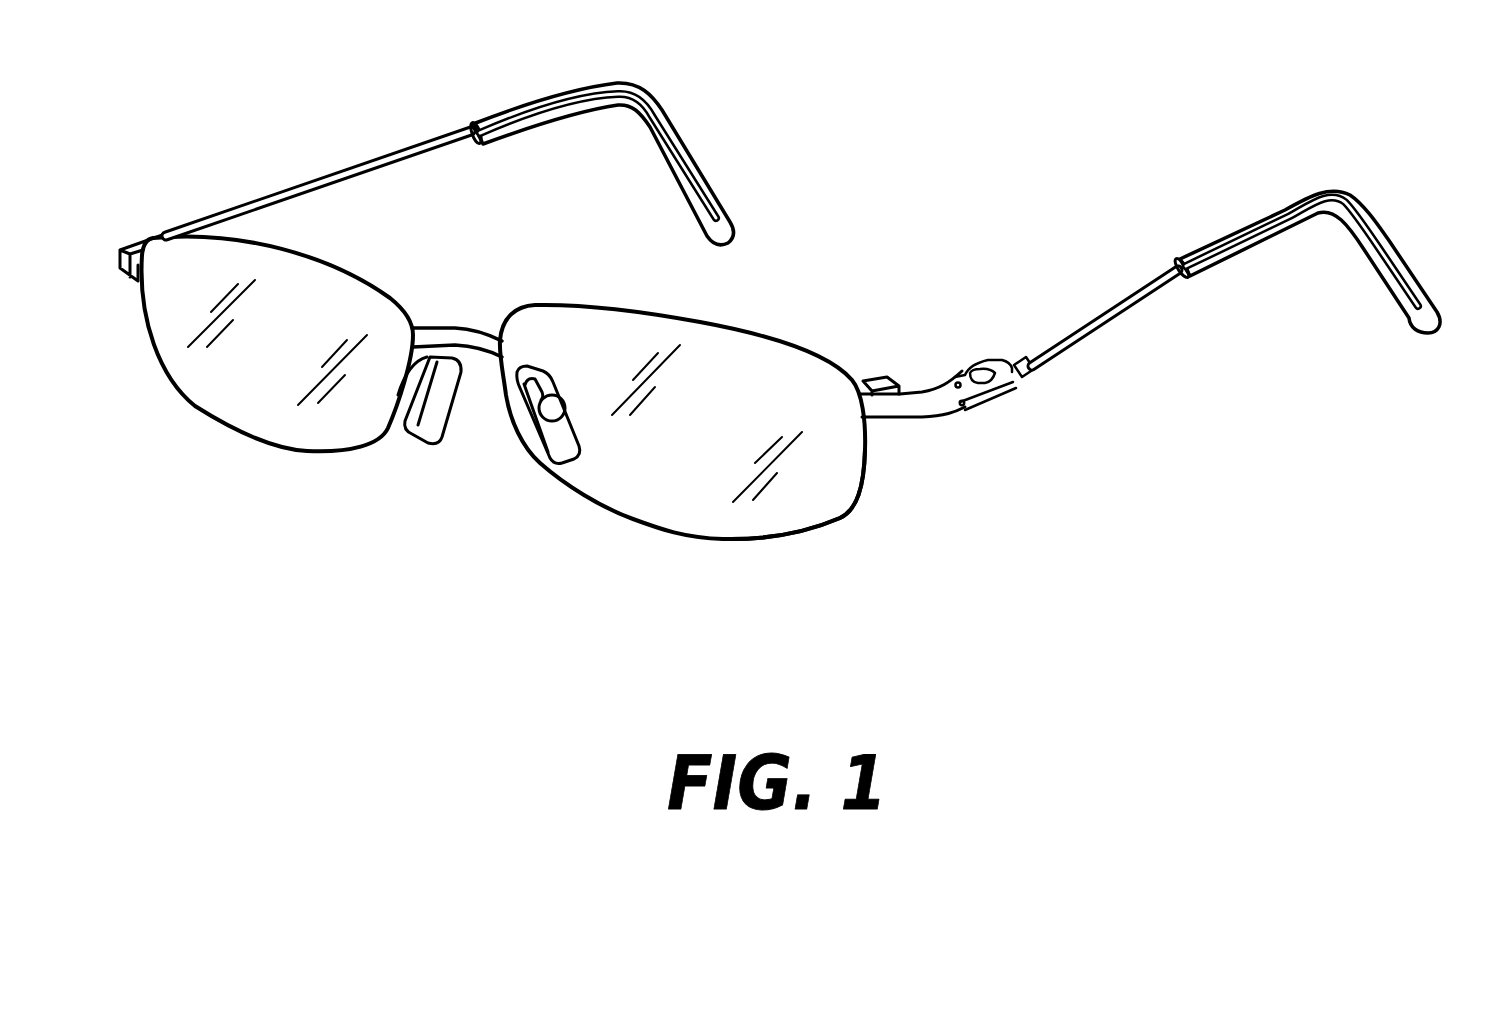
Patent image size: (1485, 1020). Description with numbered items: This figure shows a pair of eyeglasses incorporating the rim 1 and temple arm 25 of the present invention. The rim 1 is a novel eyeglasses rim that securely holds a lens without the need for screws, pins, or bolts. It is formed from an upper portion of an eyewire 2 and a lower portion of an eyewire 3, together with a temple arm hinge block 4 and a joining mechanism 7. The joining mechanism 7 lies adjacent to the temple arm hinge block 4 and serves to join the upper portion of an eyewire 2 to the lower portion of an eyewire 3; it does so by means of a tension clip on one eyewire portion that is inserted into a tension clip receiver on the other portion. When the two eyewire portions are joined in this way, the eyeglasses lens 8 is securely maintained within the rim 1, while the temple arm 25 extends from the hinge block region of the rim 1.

The rim 1 is at (780, 329).
The upper portion of an eyewire 2 is at (772, 337).
The lower portion of an eyewire 3 is at (631, 518).
The temple arm hinge block 4 is at (1004, 403).
The joining mechanism 7 is at (906, 440).
The eyeglasses lens 8 is at (822, 501).
The temple arm 25 is at (1093, 296).